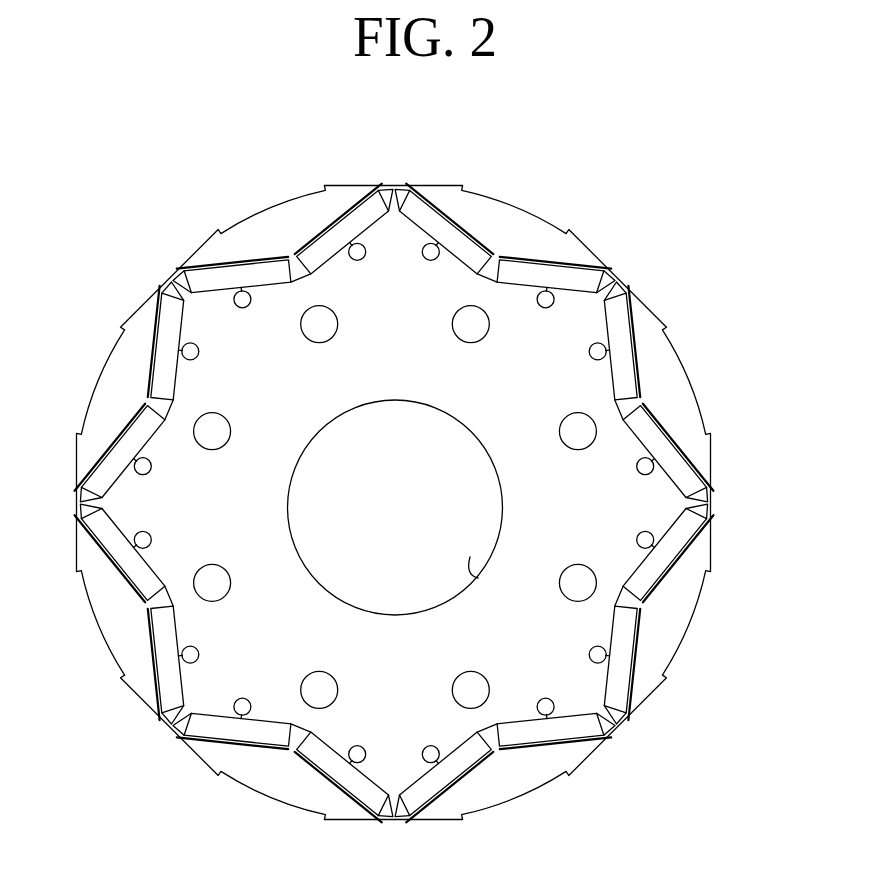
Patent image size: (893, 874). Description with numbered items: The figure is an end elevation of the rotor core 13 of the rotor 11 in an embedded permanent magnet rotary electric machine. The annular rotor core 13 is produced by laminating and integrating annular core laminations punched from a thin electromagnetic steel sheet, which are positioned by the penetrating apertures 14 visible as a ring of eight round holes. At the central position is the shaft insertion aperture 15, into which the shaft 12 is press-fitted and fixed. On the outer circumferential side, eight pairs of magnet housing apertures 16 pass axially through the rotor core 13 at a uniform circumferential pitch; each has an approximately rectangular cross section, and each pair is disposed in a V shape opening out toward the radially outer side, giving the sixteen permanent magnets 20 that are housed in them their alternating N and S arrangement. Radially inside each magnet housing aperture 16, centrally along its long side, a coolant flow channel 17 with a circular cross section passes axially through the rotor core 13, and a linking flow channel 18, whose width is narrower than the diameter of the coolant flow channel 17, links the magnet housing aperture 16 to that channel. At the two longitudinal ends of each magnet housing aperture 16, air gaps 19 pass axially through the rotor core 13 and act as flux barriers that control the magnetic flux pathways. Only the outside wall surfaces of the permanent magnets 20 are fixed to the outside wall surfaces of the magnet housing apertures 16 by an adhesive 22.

The rotor 11 is at (128, 104).
The shaft 12 is at (483, 513).
The rotor core 13 is at (673, 372).
The penetrating apertures 14 is at (590, 432).
The shaft insertion aperture 15 is at (470, 557).
The magnet housing apertures 16 is at (683, 555).
The coolant flow channels 17 is at (714, 503).
The linking flow channels 18 is at (658, 453).
The air gaps 19 is at (713, 520).
The permanent magnets 20 is at (160, 380).
The adhesive 22 is at (157, 323).